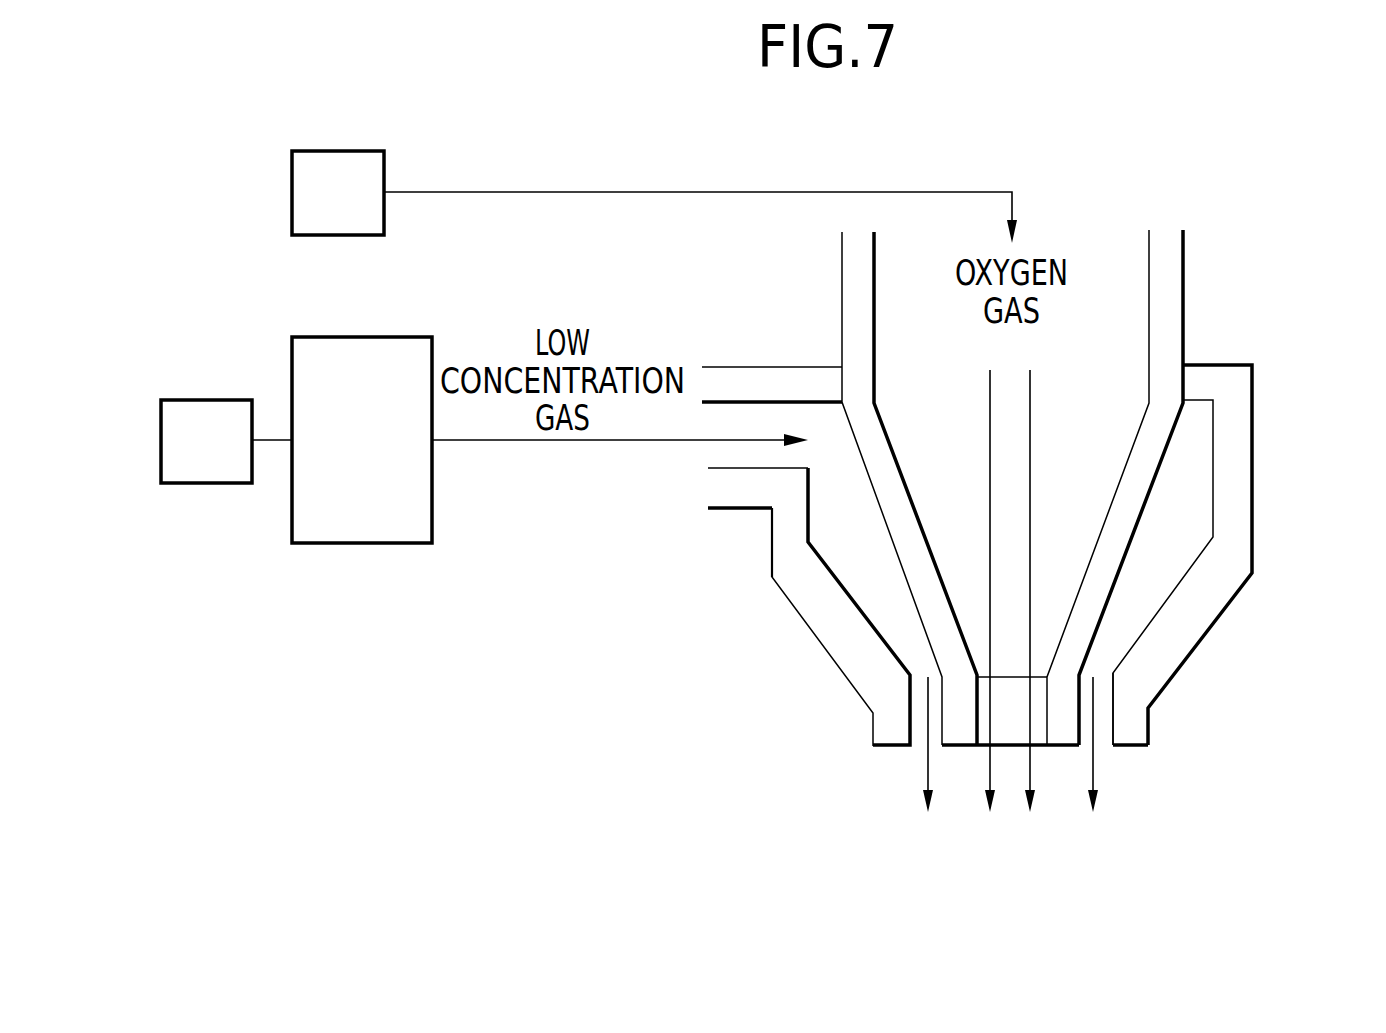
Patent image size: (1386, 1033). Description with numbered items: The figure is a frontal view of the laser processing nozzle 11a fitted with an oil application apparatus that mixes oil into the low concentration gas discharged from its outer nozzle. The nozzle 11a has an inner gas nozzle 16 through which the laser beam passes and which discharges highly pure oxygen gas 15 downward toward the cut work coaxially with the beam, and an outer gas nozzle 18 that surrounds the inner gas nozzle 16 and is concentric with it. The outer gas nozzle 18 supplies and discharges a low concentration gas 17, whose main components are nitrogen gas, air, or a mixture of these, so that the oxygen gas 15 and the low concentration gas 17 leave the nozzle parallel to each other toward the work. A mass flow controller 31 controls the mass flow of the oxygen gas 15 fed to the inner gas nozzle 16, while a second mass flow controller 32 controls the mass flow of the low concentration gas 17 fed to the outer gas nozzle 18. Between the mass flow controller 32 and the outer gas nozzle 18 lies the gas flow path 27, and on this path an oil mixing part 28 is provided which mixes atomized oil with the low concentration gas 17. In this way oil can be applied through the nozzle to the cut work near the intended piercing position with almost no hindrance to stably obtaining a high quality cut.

The nozzle 11a is at (1270, 347).
The oxygen gas 15 is at (987, 778).
The inner gas nozzle 16 is at (1040, 748).
The low concentration gas 17 is at (1093, 772).
The outer gas nozzle 18 is at (1107, 742).
The gas flow path 27 is at (753, 455).
The oil mixing part 28 is at (396, 545).
The mass flow controller 31 is at (384, 163).
The mass flow controller 32 is at (192, 484).